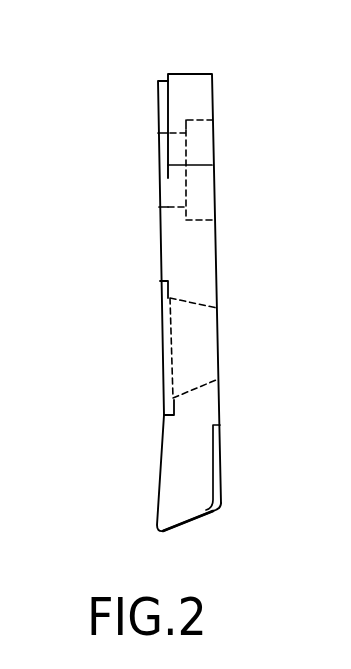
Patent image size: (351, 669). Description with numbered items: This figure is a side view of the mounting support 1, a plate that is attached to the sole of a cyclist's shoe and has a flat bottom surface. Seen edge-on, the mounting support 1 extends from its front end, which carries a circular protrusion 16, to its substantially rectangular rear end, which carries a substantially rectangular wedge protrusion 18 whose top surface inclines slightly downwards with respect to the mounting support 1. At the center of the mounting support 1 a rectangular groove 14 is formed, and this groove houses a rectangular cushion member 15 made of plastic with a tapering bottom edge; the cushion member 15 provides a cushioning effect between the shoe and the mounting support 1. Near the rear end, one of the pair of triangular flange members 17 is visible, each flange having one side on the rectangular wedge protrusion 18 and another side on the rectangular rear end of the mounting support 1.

The mounting support 1 is at (112, 120).
The rectangular groove 14 is at (161, 288).
The rectangular cushion member 15 is at (161, 340).
The circular protrusion 16 is at (197, 86).
The triangular flange member 17 is at (214, 462).
The rectangular wedge protrusion 18 is at (170, 477).